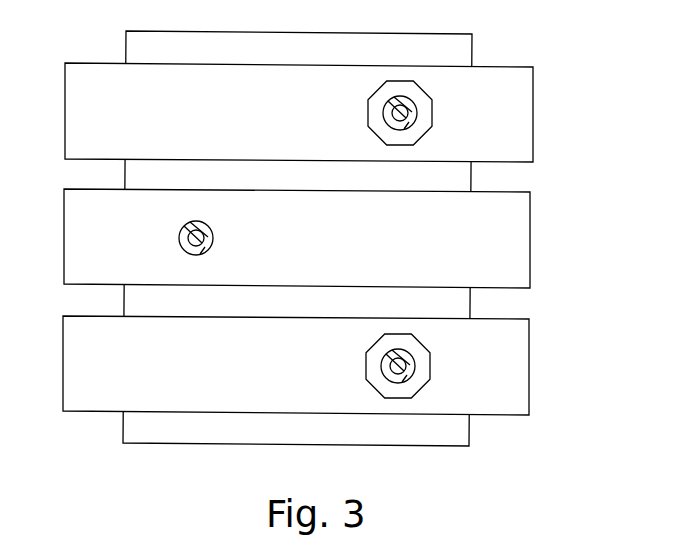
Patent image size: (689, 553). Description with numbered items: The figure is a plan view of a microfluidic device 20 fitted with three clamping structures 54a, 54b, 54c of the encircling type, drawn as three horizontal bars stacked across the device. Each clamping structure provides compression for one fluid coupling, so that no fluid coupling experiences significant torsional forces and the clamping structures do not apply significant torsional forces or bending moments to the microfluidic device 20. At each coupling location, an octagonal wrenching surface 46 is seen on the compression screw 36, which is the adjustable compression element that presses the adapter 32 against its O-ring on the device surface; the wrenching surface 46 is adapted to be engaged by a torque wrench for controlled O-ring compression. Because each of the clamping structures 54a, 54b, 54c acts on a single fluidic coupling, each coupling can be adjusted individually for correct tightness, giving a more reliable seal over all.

The microfluidic device 20 is at (133, 48).
The adapter 32 is at (183, 237).
The compression screw 36 is at (178, 225).
The wrenching surface 46 is at (423, 92).
The clamping structure 54a is at (515, 108).
The clamping structure 54b is at (517, 238).
The clamping structure 54c is at (513, 367).